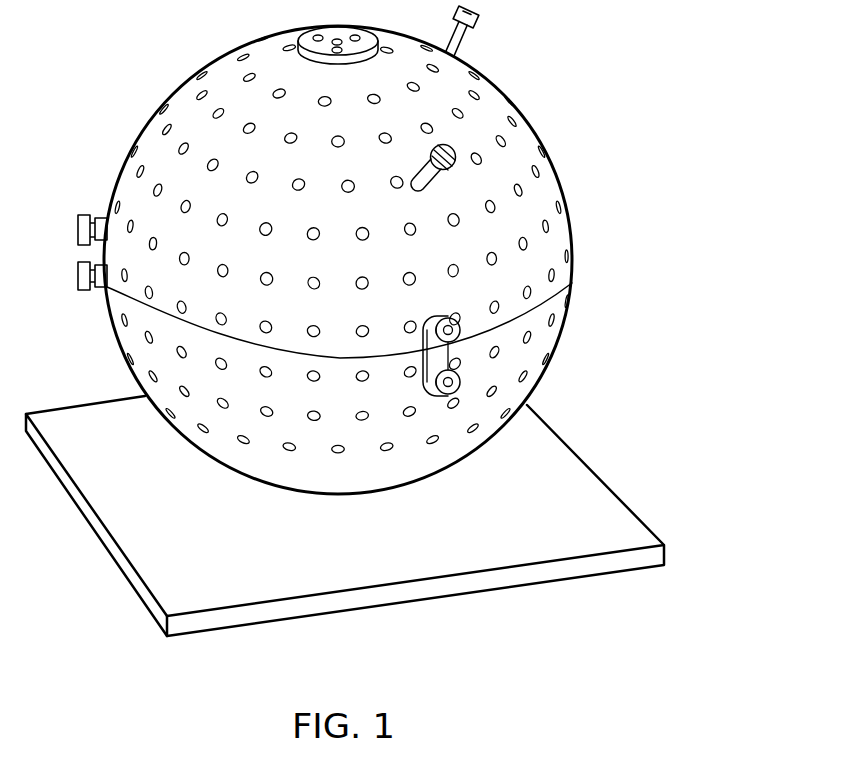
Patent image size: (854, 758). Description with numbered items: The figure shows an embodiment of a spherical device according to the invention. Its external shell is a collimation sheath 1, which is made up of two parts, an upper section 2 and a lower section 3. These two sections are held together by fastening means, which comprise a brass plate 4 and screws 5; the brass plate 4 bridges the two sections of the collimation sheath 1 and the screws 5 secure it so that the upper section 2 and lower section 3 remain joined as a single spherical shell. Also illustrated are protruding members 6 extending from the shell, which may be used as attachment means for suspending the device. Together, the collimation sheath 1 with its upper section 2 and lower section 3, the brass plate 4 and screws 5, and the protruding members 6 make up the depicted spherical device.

The collimation sheath 1 is at (507, 97).
The upper section 2 is at (207, 109).
The lower section 3 is at (200, 485).
The brass plate 4 is at (421, 362).
The screws 5 is at (460, 378).
The protruding members 6 is at (481, 165).